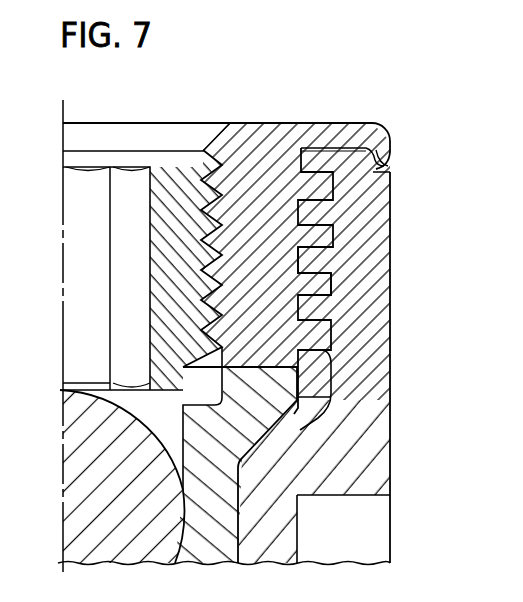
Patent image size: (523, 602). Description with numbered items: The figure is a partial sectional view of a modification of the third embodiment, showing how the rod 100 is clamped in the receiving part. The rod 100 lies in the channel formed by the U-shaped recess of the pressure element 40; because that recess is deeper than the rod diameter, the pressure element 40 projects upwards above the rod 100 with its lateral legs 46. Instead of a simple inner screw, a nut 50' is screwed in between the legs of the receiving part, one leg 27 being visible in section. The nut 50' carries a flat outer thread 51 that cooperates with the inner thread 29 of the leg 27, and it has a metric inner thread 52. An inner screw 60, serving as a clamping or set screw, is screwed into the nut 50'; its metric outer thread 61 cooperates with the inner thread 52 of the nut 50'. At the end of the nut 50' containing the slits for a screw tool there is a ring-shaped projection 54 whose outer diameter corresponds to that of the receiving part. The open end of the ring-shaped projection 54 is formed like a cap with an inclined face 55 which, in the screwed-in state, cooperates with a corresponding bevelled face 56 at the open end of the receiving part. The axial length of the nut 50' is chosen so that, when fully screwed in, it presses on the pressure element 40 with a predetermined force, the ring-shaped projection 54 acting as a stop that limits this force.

The nut 50' is at (226, 225).
The inner thread of the nut 52 is at (220, 187).
The inner screw 60 is at (150, 183).
The metric outer thread 61 is at (215, 227).
The ring-shaped projection 54 is at (337, 134).
The inclined face 55 is at (390, 134).
The bevelled face 56 is at (392, 172).
The leg of the receiving part 27 is at (373, 197).
The inner thread of the legs 29 is at (313, 263).
The outer thread of the nut 51 is at (313, 285).
The lateral legs 46 is at (287, 383).
The pressure element 40 is at (212, 540).
The rod 100 is at (82, 510).